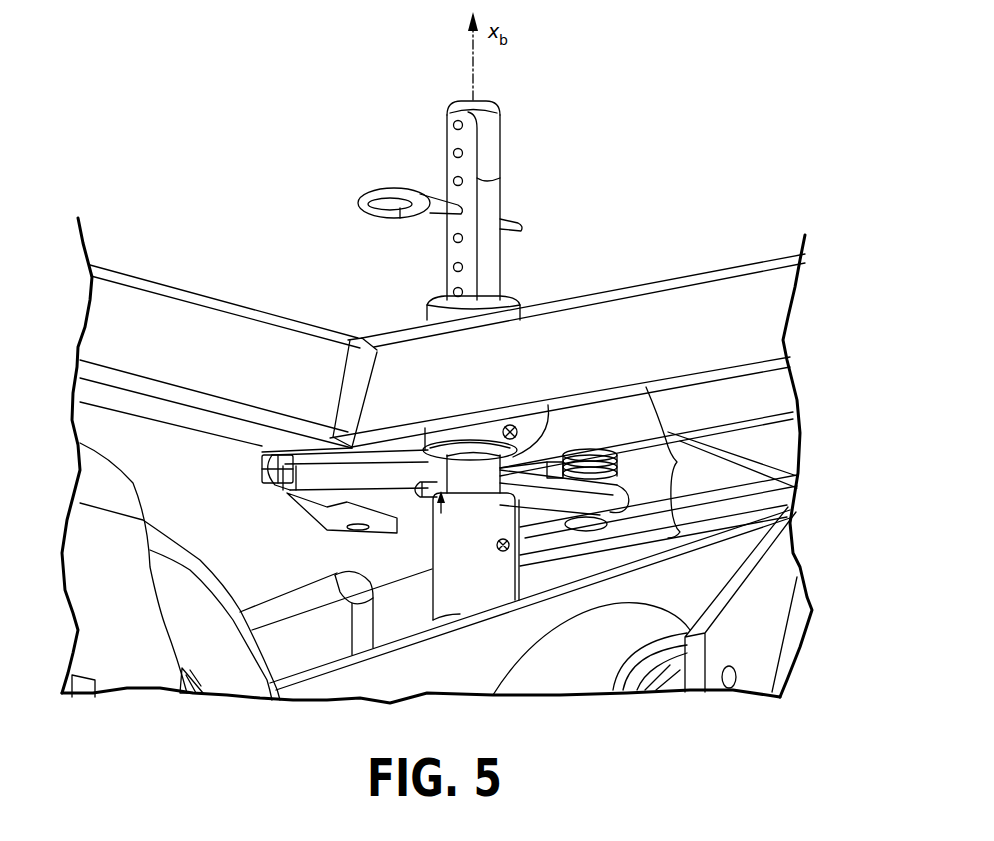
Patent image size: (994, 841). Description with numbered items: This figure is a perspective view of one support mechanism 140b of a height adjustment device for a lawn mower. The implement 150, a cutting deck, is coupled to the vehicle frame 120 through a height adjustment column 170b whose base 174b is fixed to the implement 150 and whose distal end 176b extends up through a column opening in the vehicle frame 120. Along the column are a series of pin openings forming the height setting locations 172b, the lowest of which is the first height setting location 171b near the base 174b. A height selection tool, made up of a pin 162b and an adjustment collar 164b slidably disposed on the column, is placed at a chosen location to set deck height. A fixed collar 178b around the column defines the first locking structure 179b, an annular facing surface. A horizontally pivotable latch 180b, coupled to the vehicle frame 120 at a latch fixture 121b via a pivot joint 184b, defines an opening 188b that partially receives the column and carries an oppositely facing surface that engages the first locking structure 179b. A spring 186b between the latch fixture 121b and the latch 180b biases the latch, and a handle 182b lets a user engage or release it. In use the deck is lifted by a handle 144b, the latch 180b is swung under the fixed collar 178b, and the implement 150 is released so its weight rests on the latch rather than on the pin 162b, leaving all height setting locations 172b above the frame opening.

The vehicle frame 120 is at (637, 290).
The latch fixture 121b is at (262, 477).
The support mechanism 140b is at (688, 462).
The handle 144b is at (290, 598).
The implement 150 is at (390, 640).
The pin 162b is at (404, 192).
The adjustment collar 164b is at (503, 302).
The height adjustment column 170b is at (497, 265).
The first height setting location 171b is at (447, 295).
The height setting locations 172b is at (488, 182).
The base 174b is at (484, 592).
The distal end 176b is at (482, 101).
The fixed collar 178b is at (472, 430).
The first locking structure 179b is at (528, 458).
The latch 180b is at (322, 491).
The handle 182b is at (342, 534).
The pivot joint 184b is at (590, 528).
The spring 186b is at (617, 460).
The opening 188b is at (437, 512).